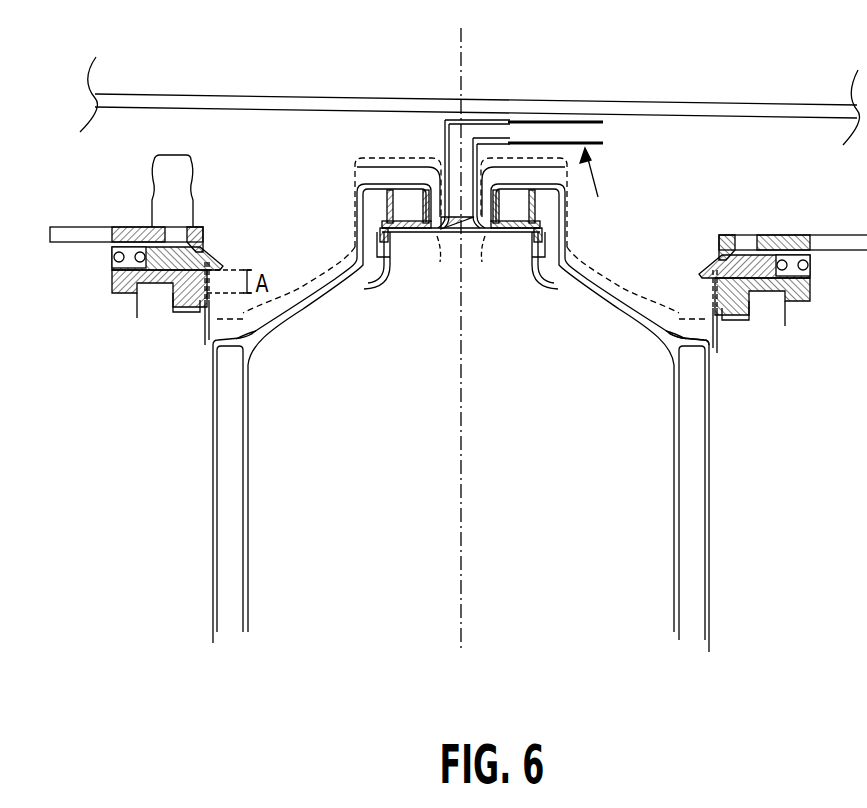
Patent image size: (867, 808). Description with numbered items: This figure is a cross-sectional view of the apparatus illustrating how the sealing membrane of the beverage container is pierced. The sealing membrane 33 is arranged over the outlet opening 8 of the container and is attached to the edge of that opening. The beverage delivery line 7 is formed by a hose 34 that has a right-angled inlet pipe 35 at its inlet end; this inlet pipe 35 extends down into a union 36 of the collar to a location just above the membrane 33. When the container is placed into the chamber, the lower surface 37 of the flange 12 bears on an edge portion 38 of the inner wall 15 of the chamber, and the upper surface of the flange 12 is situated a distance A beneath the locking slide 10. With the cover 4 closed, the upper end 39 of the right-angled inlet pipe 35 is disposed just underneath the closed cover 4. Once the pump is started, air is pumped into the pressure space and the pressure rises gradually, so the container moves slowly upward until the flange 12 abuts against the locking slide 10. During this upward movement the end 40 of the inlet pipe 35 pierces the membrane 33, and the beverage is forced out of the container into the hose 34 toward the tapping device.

The cover 4 is at (187, 97).
The upper end of the right-angled inlet pipe 39 is at (467, 118).
The right-angled inlet pipe 35 is at (446, 136).
The hose 34 is at (566, 120).
The beverage delivery line 7 is at (594, 188).
The union of the collar 36 is at (357, 167).
The flange 12 is at (268, 322).
The lower surface of the flange 37 is at (258, 338).
The edge portion of the inner wall 38 is at (212, 346).
The inner wall of the chamber 15 is at (212, 490).
The locking slide 10 is at (207, 247).
The outlet opening 8 is at (400, 256).
The sealing membrane 33 is at (473, 238).
The end of the inlet pipe 40 is at (450, 238).